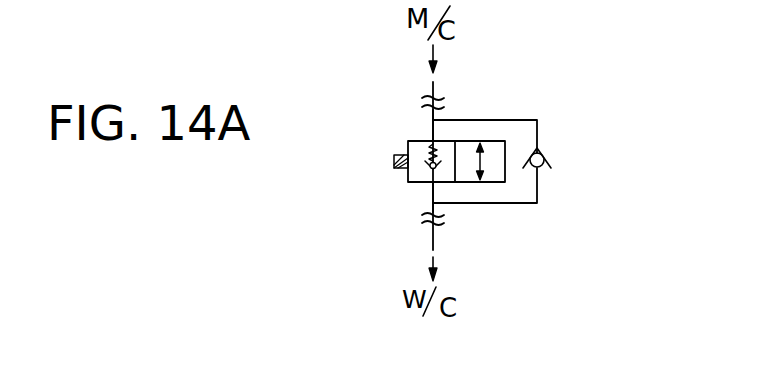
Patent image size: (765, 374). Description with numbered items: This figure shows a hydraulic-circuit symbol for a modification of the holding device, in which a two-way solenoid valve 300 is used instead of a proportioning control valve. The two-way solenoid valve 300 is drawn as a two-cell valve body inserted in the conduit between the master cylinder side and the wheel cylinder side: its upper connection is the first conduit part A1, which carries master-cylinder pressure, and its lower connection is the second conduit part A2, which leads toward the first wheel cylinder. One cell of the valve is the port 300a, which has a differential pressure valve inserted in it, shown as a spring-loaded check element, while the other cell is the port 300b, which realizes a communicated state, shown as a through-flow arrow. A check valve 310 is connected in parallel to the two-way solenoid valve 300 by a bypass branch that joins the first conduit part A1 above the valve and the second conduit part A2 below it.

The two-way solenoid valve 300 is at (408, 178).
The port 300a is at (408, 143).
The port 300b is at (480, 138).
The check valve 310 is at (543, 150).
The first conduit part A1 is at (430, 130).
The second conduit part A2 is at (430, 201).